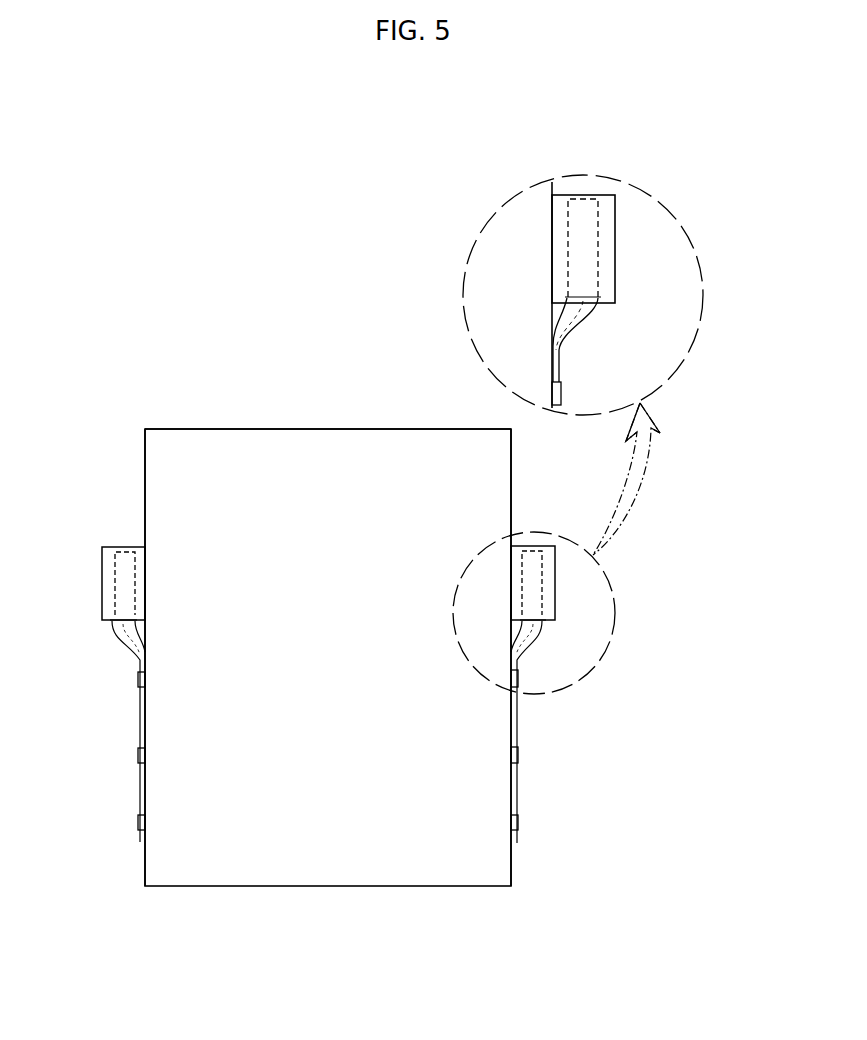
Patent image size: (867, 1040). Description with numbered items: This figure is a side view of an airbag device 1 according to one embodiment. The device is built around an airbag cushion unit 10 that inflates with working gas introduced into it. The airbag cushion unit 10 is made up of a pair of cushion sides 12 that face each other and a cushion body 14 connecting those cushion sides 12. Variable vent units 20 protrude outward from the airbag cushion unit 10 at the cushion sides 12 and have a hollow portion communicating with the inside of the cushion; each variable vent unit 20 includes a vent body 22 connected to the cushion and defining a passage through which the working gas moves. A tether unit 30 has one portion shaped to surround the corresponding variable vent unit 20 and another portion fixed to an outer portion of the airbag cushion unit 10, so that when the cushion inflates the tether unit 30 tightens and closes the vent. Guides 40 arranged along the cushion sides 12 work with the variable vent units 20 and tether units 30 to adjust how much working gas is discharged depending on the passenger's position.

The airbag device 1 is at (269, 316).
The airbag cushion unit 10 is at (225, 413).
The cushion sides 12 is at (145, 472).
The cushion body 14 is at (303, 448).
The variable vent unit 20 is at (619, 236).
The vent body 22 is at (617, 208).
The tether unit 30 is at (598, 267).
The guide 40 is at (518, 753).